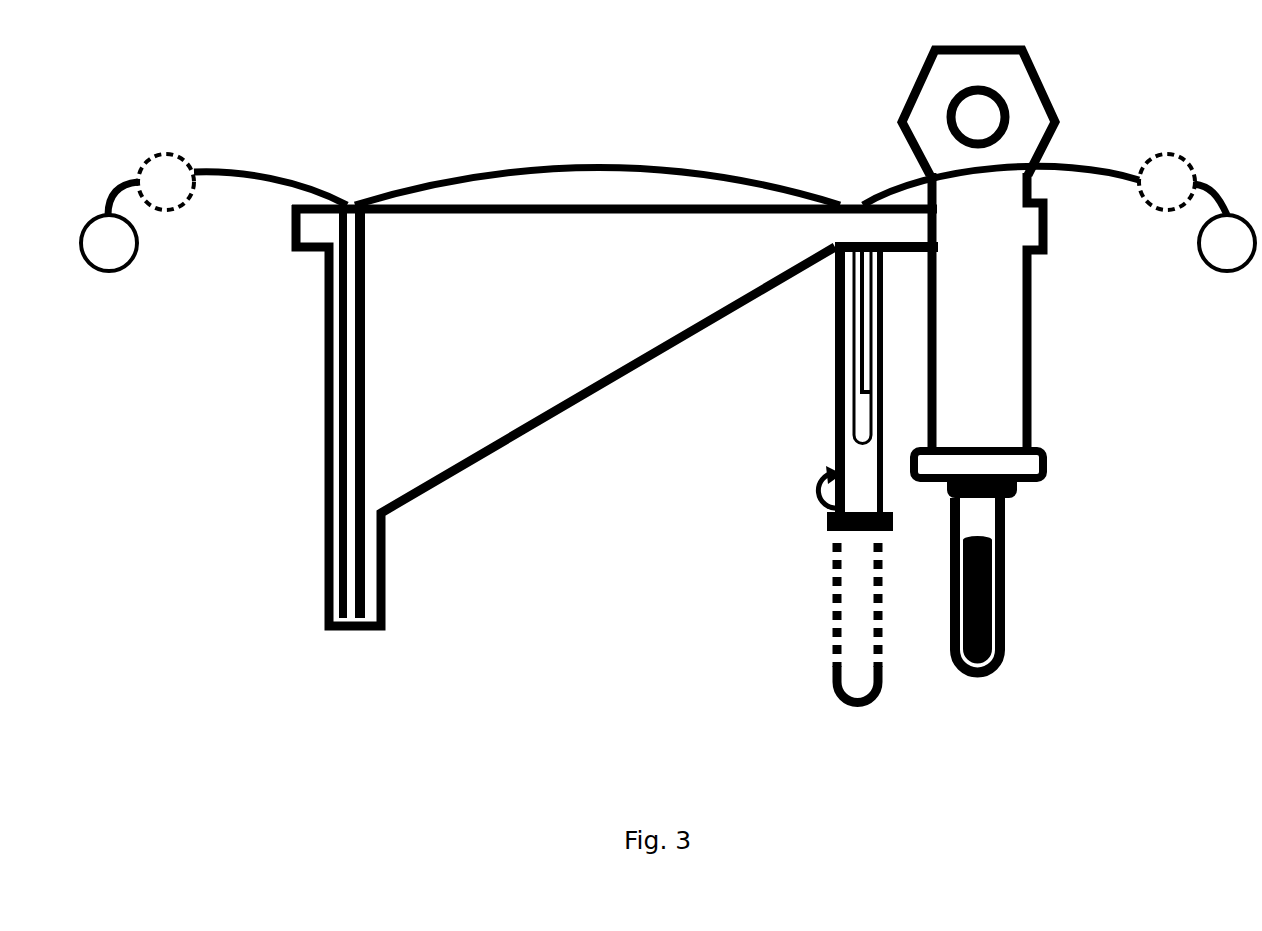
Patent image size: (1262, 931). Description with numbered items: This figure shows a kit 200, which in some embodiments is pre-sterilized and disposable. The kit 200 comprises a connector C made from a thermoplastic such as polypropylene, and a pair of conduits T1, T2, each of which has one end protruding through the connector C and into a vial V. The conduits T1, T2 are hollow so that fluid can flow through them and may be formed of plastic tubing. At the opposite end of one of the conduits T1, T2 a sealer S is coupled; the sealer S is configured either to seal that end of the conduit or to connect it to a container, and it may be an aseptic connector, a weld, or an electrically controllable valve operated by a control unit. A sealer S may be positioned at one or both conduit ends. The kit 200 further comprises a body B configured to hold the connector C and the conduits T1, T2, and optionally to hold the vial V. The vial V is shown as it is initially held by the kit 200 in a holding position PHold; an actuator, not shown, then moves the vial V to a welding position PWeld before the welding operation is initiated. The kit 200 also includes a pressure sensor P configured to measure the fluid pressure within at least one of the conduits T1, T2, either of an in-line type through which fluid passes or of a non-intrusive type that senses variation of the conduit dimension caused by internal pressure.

The kit 200 is at (1030, 405).
The body B is at (615, 415).
The connector C is at (838, 343).
The vial V is at (1003, 653).
The conduit T1 is at (582, 169).
The conduit T2 is at (1118, 175).
The pressure sensor P is at (667, 184).
The sealer S is at (668, 243).
The welding position PWeld is at (857, 652).
The holding position PHold is at (981, 741).